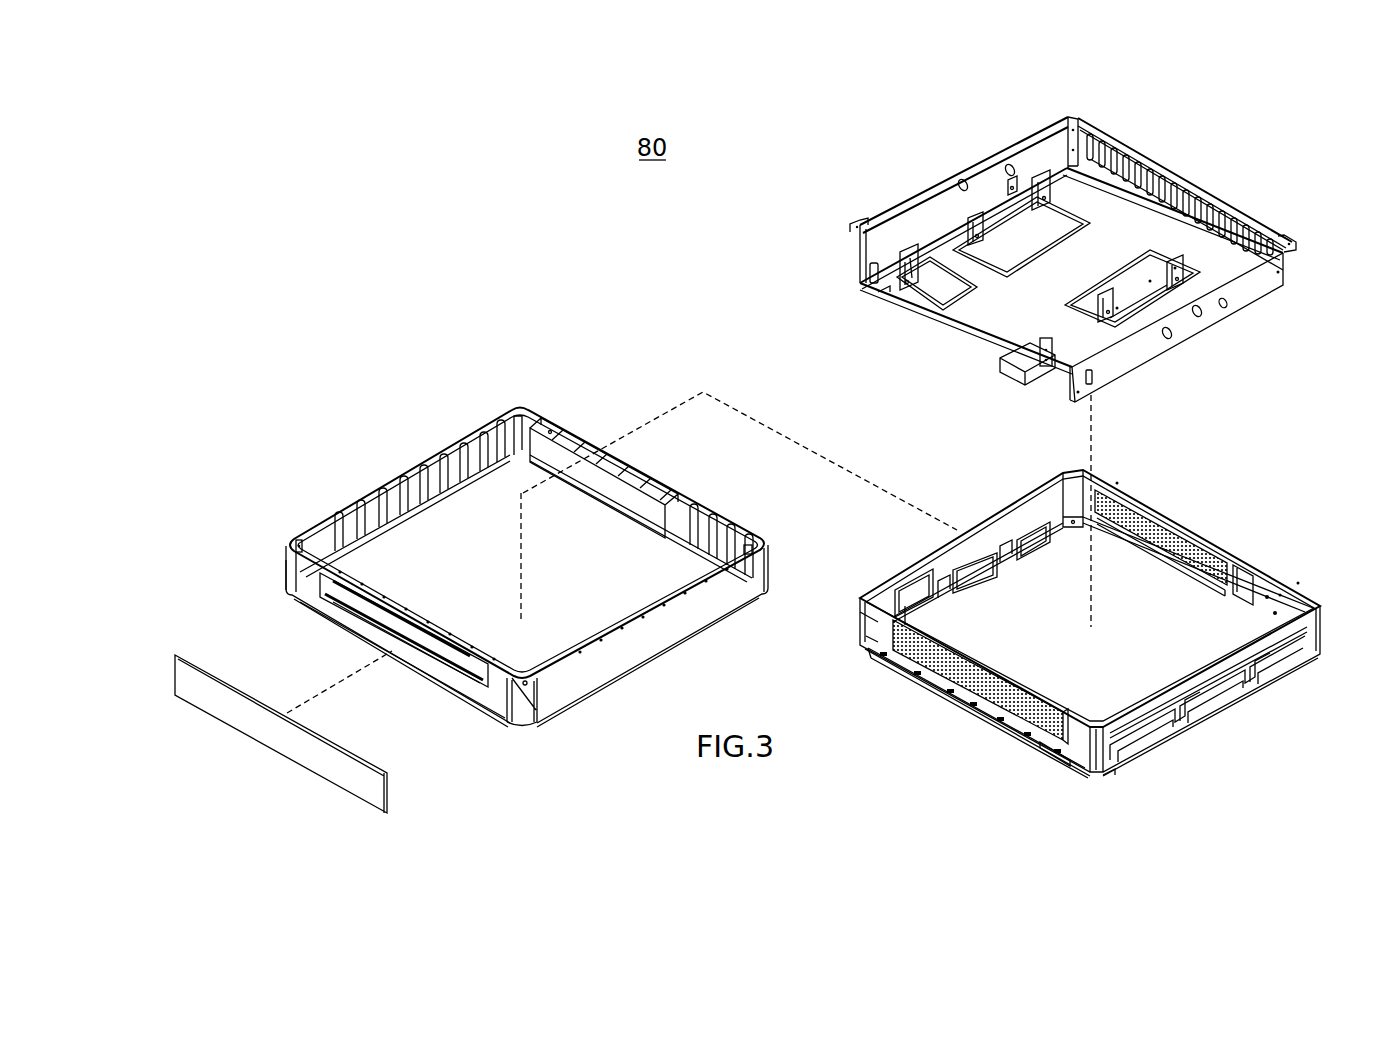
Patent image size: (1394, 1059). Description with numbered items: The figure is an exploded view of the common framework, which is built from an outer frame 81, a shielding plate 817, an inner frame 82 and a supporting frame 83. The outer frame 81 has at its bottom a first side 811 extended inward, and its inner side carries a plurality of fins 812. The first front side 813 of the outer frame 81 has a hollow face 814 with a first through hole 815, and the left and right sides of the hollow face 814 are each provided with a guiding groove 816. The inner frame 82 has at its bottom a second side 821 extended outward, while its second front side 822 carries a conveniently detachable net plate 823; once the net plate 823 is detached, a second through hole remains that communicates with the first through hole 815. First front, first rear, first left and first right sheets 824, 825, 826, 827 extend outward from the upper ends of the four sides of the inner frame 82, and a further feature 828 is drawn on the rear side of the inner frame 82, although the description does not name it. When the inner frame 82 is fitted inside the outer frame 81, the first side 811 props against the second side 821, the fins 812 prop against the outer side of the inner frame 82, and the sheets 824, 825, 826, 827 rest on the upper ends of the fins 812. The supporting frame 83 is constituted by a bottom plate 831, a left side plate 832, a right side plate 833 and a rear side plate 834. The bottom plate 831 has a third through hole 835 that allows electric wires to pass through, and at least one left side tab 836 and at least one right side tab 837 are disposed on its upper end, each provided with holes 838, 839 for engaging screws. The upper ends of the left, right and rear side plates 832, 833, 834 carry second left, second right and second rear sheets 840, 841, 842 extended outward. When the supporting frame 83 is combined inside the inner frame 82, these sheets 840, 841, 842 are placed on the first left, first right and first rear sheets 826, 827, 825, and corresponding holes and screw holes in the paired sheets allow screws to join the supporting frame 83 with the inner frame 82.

The outer frame 81 is at (752, 580).
The first side 811 is at (475, 432).
The fins 812 is at (412, 462).
The first front side 813 is at (288, 575).
The hollow face 814 is at (500, 695).
The first through hole 815 is at (447, 668).
The guiding groove 816 is at (300, 540).
The shielding plate 817 is at (275, 723).
The inner frame 82 is at (1320, 622).
The second side 821 is at (1193, 720).
The second front side 822 is at (875, 623).
The net plate 823 is at (950, 683).
The first front sheet 824 is at (898, 663).
The first rear sheet 825 is at (1250, 555).
The first left sheet 826 is at (960, 528).
The first right sheet 827 is at (1257, 647).
The opening 828 is at (1280, 597).
The supporting frame 83 is at (1185, 160).
The bottom plate 831 is at (970, 328).
The left side plate 832 is at (940, 213).
The right side plate 833 is at (1255, 295).
The rear side plate 834 is at (1213, 220).
The third through hole 835 is at (1100, 200).
The left side tab 836 is at (1003, 207).
The right side tab 837 is at (1130, 282).
The holes 838 is at (1013, 187).
The holes 839 is at (1150, 282).
The second left sheet 840 is at (865, 223).
The second right sheet 841 is at (1296, 247).
The second rear sheet 842 is at (1233, 197).